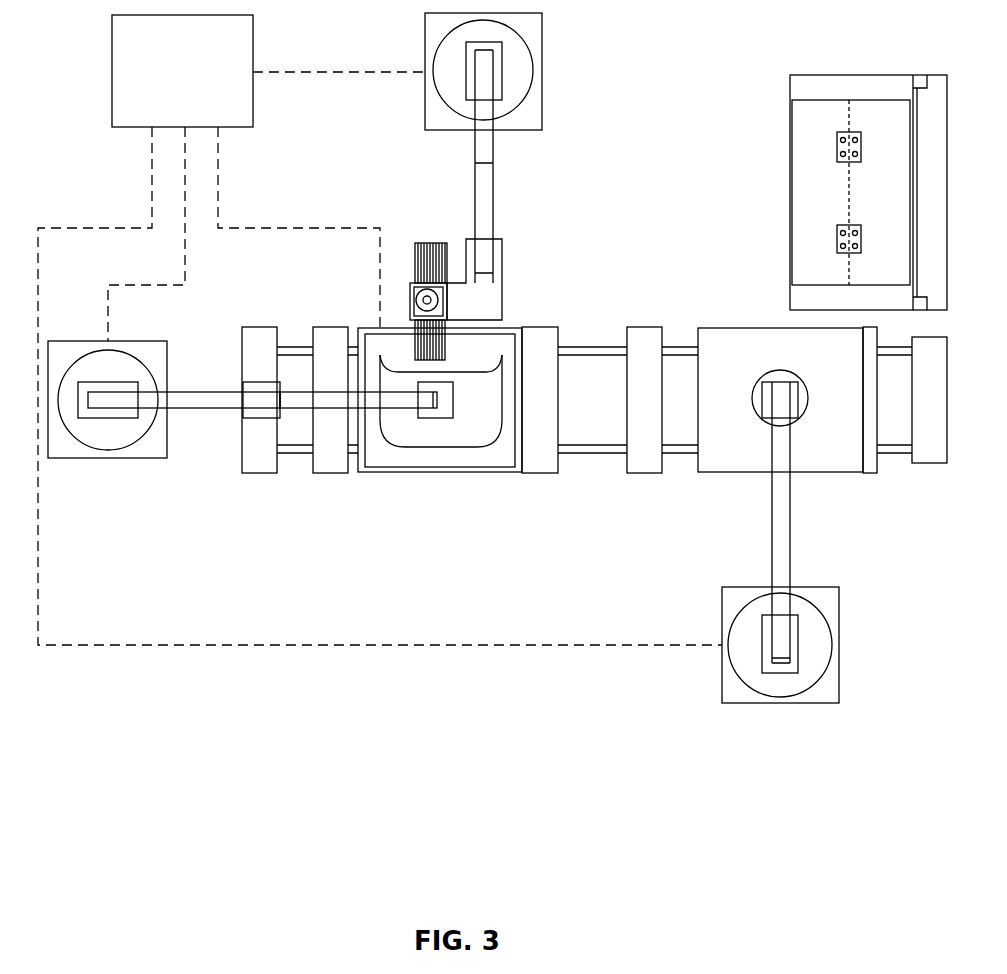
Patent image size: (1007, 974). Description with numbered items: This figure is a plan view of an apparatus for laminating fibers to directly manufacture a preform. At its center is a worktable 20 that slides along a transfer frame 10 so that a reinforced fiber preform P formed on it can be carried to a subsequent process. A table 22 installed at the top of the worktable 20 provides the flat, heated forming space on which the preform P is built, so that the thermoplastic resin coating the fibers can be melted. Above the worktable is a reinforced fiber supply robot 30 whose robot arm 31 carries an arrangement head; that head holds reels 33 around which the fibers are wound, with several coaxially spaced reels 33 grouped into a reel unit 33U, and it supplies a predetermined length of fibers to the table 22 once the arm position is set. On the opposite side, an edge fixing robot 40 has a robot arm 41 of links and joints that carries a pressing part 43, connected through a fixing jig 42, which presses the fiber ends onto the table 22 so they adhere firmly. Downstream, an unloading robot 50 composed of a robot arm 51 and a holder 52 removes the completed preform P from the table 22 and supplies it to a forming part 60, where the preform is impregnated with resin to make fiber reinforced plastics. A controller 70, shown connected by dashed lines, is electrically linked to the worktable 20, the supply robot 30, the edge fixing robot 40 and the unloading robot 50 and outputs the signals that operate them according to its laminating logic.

The transfer frame 10 is at (600, 455).
The worktable 20 is at (439, 443).
The table 22 is at (500, 445).
The reinforced fiber preform P is at (418, 430).
The reinforced fiber supply robot 30 is at (468, 186).
The robot arm 31 is at (480, 183).
The reel 33 is at (447, 352).
The reel unit 33U is at (414, 234).
The edge fixing robot 40 is at (242, 435).
The robot arm 41 is at (215, 400).
The fixing jig 42 is at (298, 400).
The pressing part 43 is at (445, 420).
The unloading robot 50 is at (733, 491).
The robot arm 51 is at (790, 525).
The holder 52 is at (742, 340).
The forming part 60 is at (797, 185).
The controller 70 is at (112, 73).